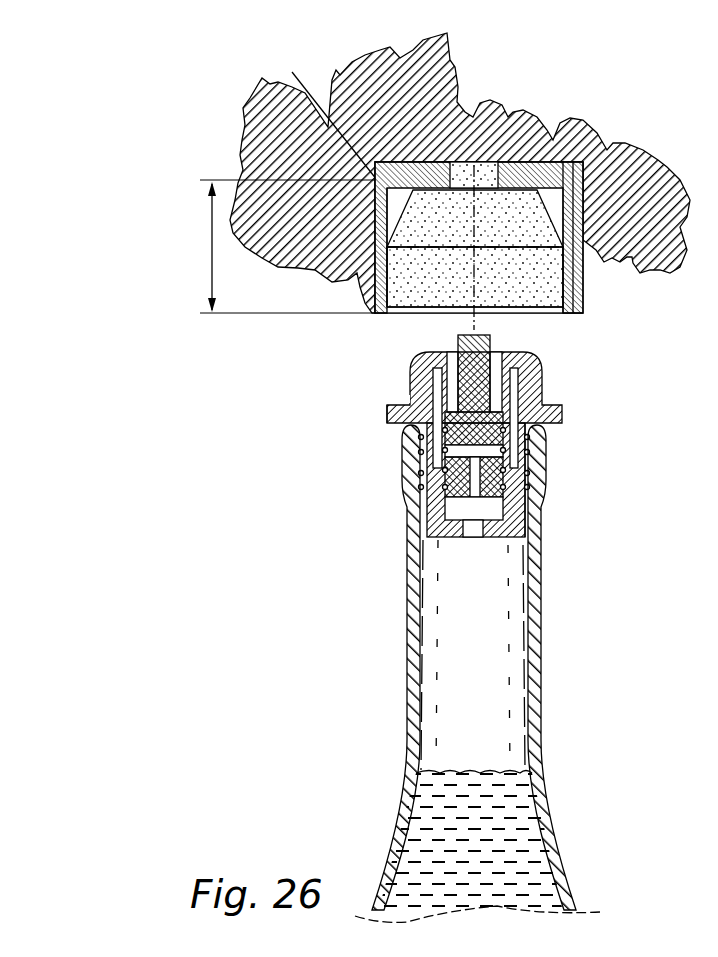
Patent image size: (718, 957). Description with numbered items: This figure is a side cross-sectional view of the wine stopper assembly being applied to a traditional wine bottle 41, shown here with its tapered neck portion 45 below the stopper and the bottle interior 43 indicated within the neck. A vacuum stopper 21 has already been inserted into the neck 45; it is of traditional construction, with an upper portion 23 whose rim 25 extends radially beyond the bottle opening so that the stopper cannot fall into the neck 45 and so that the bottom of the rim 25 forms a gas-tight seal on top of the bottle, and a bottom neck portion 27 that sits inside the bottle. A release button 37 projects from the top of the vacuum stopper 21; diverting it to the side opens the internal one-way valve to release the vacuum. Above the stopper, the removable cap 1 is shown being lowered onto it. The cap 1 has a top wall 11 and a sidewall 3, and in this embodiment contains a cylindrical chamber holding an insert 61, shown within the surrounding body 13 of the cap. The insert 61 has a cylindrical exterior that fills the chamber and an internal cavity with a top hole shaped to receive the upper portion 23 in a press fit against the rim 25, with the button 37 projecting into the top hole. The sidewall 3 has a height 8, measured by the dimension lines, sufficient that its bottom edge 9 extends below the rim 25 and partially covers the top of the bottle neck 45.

The removable cap 1 is at (630, 78).
The sidewall 3 is at (583, 285).
The height 8 is at (208, 250).
The bottom edge 9 is at (570, 315).
The top wall 11 is at (328, 112).
The ice block 13 is at (500, 100).
The vacuum stopper 21 is at (570, 410).
The upper portion 23 is at (408, 398).
The rim 25 is at (386, 412).
The bottom neck portion 27 is at (541, 466).
The release button 37 is at (492, 337).
The wine bottle 41 is at (556, 814).
The bottle interior 43 is at (490, 712).
The tapered neck portion 45 is at (541, 648).
The insert 61 is at (412, 302).